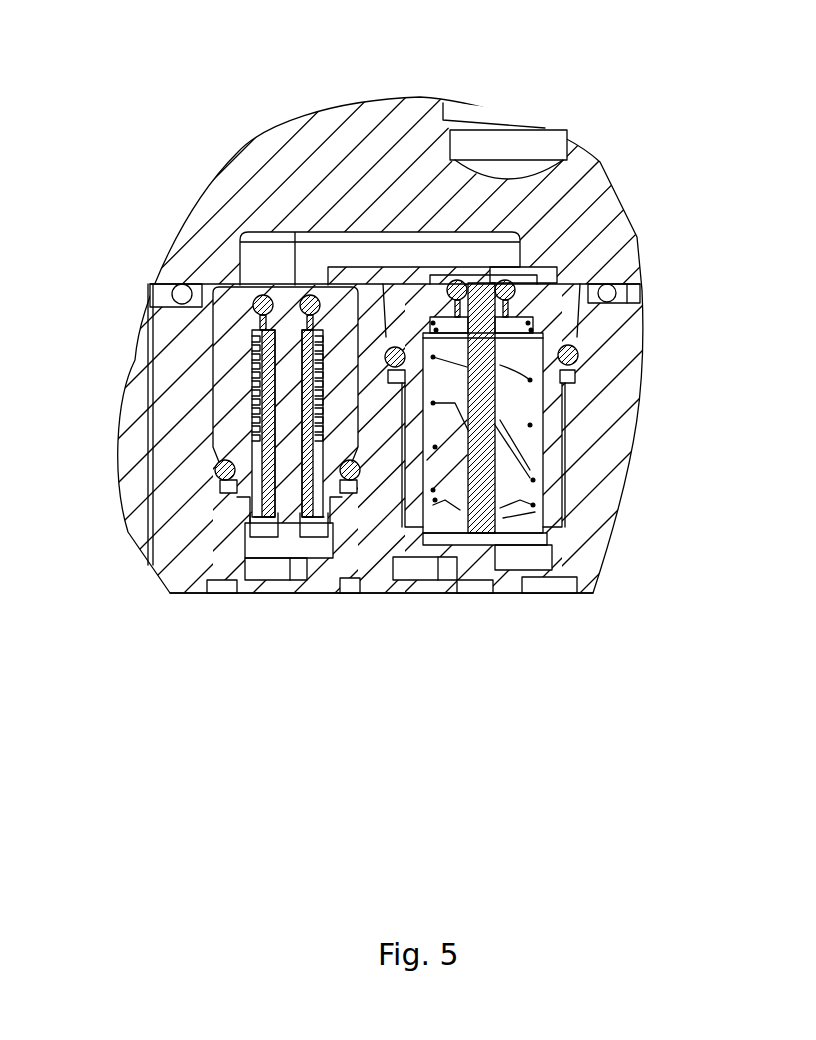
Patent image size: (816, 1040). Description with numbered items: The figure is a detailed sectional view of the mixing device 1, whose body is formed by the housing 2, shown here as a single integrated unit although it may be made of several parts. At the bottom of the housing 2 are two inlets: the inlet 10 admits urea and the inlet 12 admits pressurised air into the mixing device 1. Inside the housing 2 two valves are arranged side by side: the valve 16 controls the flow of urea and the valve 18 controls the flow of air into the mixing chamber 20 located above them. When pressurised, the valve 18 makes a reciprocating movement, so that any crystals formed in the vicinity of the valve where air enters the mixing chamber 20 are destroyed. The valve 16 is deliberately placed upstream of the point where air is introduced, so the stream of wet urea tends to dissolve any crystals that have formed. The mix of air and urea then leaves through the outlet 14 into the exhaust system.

The mixing device 1 is at (215, 155).
The housing 2 is at (320, 130).
The inlet 10 is at (297, 578).
The inlet 12 is at (527, 562).
The outlet 14 is at (513, 250).
The valve 16 is at (230, 392).
The valve 18 is at (497, 393).
The mixing chamber 20 is at (353, 250).